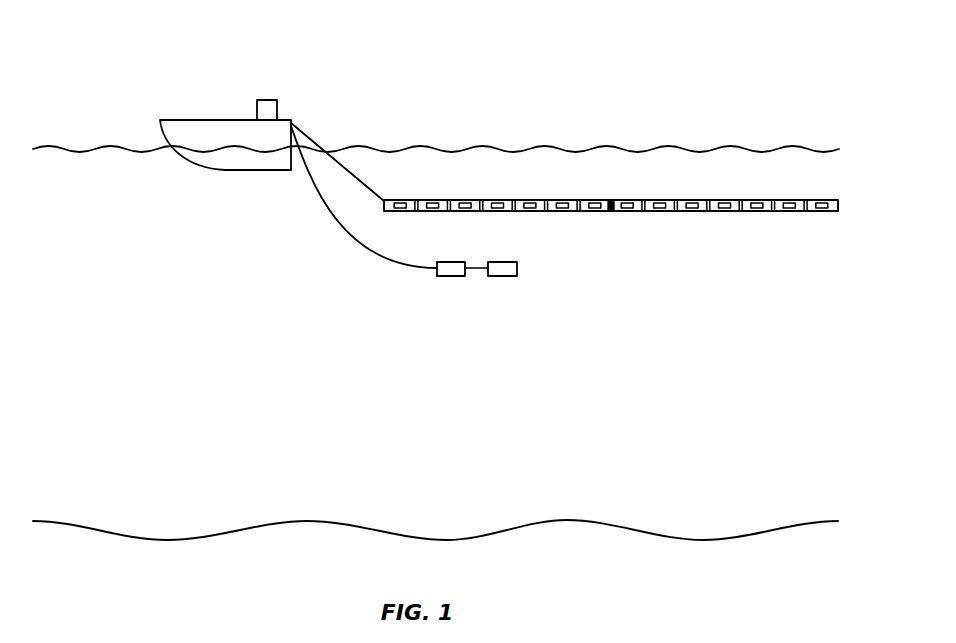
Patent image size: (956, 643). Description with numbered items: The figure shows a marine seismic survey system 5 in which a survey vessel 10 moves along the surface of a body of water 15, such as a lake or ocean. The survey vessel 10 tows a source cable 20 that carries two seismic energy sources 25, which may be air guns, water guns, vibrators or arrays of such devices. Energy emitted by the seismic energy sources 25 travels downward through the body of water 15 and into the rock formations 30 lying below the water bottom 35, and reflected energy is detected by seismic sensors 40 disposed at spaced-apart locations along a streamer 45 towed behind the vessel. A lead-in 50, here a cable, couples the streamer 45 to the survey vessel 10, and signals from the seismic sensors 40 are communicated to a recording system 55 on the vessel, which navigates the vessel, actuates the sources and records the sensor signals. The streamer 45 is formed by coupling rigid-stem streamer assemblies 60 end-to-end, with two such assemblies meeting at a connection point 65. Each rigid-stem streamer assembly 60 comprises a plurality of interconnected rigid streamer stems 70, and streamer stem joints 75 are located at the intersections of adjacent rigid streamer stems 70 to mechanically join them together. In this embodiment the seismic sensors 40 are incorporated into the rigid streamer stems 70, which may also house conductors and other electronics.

The marine seismic survey system 5 is at (207, 45).
The survey vessel 10 is at (180, 120).
The body of water 15 is at (249, 320).
The source cable 20 is at (330, 224).
The seismic energy sources 25 is at (452, 277).
The rock formations 30 is at (579, 558).
The water bottom 35 is at (567, 521).
The seismic sensors 40 is at (399, 202).
The streamer 45 is at (666, 301).
The lead-in 50 is at (348, 166).
The recording system 55 is at (267, 100).
The rigid-stem streamer assemblies 60 is at (505, 219).
The connection point 65 is at (611, 200).
The rigid streamer stems 70 is at (398, 212).
The streamer stem joints 75 is at (416, 200).